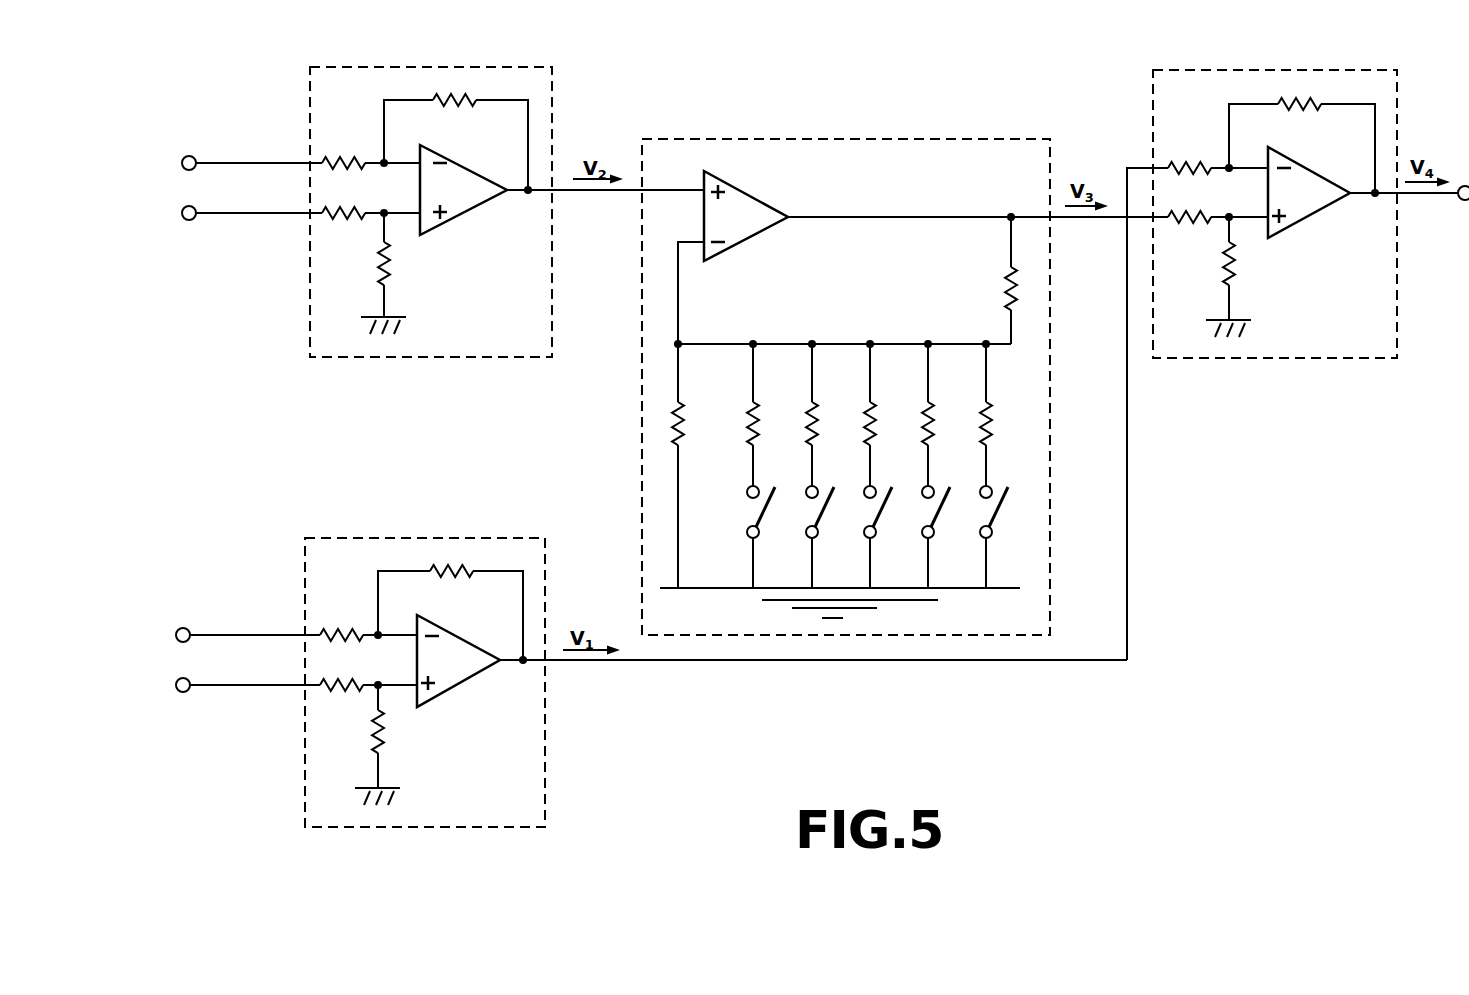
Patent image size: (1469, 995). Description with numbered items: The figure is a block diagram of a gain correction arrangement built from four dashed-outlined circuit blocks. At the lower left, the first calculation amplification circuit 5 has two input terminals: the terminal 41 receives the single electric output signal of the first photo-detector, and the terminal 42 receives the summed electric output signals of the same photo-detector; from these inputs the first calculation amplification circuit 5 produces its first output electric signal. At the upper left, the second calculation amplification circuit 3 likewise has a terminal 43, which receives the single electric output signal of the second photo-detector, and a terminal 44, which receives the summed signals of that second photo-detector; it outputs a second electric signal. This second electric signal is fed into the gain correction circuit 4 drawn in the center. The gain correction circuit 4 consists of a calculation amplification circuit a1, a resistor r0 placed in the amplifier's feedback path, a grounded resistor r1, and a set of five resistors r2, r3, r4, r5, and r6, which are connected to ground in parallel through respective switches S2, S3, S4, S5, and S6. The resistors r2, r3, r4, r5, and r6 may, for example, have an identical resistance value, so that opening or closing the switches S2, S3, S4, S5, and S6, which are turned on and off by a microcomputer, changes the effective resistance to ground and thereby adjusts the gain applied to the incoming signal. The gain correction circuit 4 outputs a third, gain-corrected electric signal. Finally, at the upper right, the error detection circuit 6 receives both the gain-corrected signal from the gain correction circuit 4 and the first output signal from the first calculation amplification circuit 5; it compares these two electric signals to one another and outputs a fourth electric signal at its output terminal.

The second calculation amplification circuit 3 is at (467, 67).
The gain correction circuit 4 is at (913, 139).
The first calculation amplification circuit 5 is at (460, 538).
The error detection circuit 6 is at (1297, 68).
The terminal 41 is at (177, 682).
The terminal 42 is at (177, 632).
The terminal 43 is at (183, 210).
The terminal 44 is at (183, 160).
The calculation amplification circuit a1 is at (767, 208).
The resistor r0 is at (1004, 268).
The grounded resistor r1 is at (686, 427).
The resistor r2 is at (761, 427).
The resistor r3 is at (820, 427).
The resistor r4 is at (878, 427).
The resistor r5 is at (936, 427).
The resistor r6 is at (994, 427).
The switch S2 is at (773, 508).
The switch S3 is at (832, 508).
The switch S4 is at (890, 508).
The switch S5 is at (948, 508).
The switch S6 is at (1006, 508).